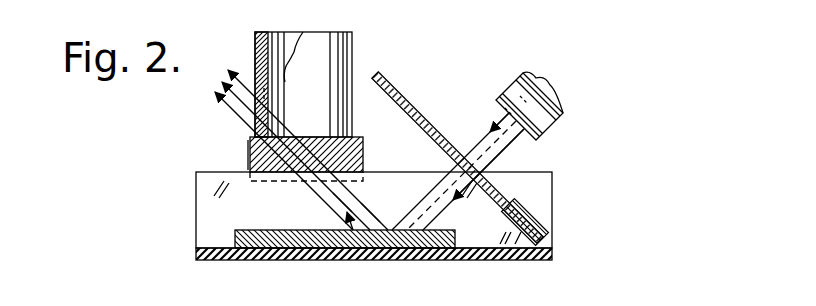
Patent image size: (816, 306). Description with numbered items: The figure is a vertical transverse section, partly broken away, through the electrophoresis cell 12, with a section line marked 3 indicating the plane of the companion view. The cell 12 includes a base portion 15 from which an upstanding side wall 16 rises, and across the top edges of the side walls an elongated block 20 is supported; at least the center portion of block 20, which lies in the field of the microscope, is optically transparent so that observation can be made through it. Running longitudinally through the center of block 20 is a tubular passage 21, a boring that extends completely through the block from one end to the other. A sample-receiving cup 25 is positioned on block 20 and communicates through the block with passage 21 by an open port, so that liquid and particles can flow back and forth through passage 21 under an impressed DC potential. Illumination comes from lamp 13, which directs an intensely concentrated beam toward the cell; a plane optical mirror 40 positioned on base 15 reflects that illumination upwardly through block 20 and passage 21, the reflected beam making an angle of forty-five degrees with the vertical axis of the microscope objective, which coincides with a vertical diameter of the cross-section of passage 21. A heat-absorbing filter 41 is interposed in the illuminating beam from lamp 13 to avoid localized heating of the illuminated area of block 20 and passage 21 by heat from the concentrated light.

The section line 3- 3 is at (307, 10).
The cell 12 is at (246, 160).
The lamp 13 is at (545, 95).
The base portion 15 is at (522, 260).
The side wall 16 is at (553, 181).
The elongated block 20 is at (357, 157).
The tubular passage 21 is at (306, 136).
The sample-receiving cup 25 is at (353, 40).
The plane optical mirror 40 is at (236, 222).
The heat-absorbing filter 41 is at (404, 98).